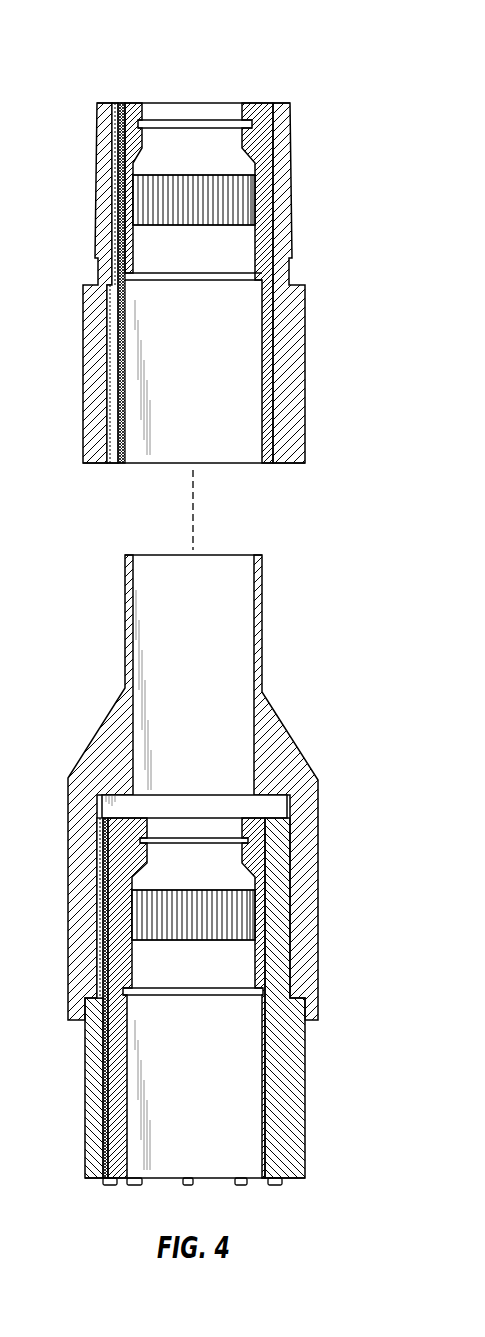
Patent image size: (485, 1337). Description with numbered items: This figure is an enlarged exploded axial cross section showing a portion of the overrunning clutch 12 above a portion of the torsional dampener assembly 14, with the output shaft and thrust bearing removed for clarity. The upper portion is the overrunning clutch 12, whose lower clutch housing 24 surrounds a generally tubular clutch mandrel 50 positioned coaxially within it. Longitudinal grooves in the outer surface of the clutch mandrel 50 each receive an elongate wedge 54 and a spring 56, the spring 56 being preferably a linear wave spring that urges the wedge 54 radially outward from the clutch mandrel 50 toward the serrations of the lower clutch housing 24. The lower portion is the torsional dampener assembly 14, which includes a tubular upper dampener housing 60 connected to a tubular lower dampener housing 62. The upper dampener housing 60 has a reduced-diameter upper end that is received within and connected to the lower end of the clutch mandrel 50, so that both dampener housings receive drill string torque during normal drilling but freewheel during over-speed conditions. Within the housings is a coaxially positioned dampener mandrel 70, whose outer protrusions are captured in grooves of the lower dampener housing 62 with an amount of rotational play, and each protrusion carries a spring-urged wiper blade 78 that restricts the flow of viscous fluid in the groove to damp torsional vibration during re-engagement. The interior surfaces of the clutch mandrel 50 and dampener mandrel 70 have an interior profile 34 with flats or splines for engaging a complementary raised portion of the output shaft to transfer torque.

The overrunning clutch 12 is at (218, 258).
The torsional dampener assembly 14 is at (227, 884).
The lower clutch housing 24 is at (97, 187).
The interior profile 34 is at (256, 204).
The clutch mandrel 50 is at (256, 103).
The wedge 54 is at (115, 103).
The spring 56 is at (122, 103).
The upper dampener housing 60 is at (292, 742).
The lower dampener housing 62 is at (305, 1090).
The dampener mandrel 70 is at (130, 1185).
The wiper blade 78 is at (110, 1185).